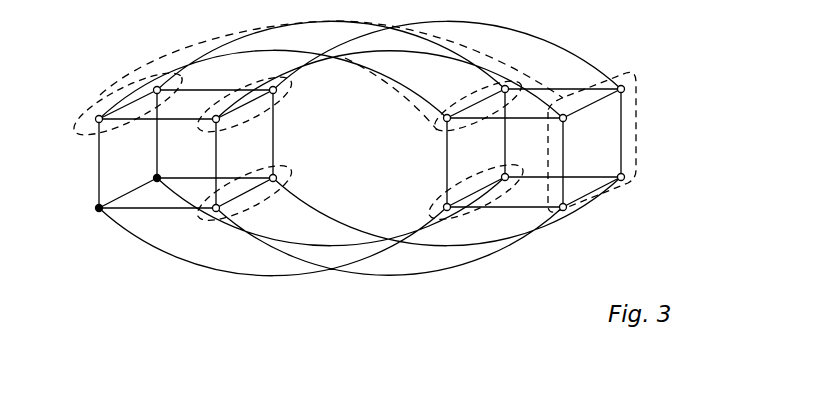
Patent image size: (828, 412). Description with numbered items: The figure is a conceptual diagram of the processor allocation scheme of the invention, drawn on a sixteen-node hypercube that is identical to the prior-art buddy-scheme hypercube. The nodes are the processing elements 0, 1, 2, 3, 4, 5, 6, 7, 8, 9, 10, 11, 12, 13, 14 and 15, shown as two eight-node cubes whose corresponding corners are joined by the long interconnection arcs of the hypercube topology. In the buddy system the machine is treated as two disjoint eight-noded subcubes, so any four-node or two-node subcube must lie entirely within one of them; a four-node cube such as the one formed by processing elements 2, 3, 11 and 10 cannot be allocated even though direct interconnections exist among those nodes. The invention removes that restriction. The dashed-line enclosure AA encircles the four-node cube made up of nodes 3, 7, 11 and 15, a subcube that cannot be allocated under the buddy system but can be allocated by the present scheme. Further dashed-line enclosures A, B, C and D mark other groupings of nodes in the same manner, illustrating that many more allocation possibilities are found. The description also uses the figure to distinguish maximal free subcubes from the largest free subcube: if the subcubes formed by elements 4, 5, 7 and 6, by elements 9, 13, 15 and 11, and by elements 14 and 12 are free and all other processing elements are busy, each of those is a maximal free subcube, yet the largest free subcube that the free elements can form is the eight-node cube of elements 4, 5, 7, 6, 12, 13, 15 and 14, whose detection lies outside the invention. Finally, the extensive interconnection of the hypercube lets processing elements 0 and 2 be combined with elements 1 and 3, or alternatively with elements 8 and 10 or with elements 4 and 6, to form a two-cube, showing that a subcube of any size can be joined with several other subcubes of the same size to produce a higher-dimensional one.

The processing element 0 is at (214, 207).
The processing element 1 is at (97, 208).
The processing element 2 is at (214, 121).
The processing element 3 is at (97, 118).
The processing element 4 is at (275, 180).
The processing element 5 is at (155, 177).
The processing element 6 is at (275, 92).
The processing element 7 is at (159, 92).
The processing element 8 is at (565, 209).
The processing element 9 is at (445, 206).
The processing element 10 is at (565, 120).
The processing element 11 is at (445, 118).
The processing element 12 is at (623, 179).
The processing element 13 is at (504, 175).
The processing element 14 is at (623, 91).
The processing element 15 is at (503, 89).
The subcube A is at (628, 72).
The dashed-line enclosure AA is at (118, 74).
The subcube B is at (257, 215).
The subcube C is at (233, 128).
The subcube D is at (441, 208).